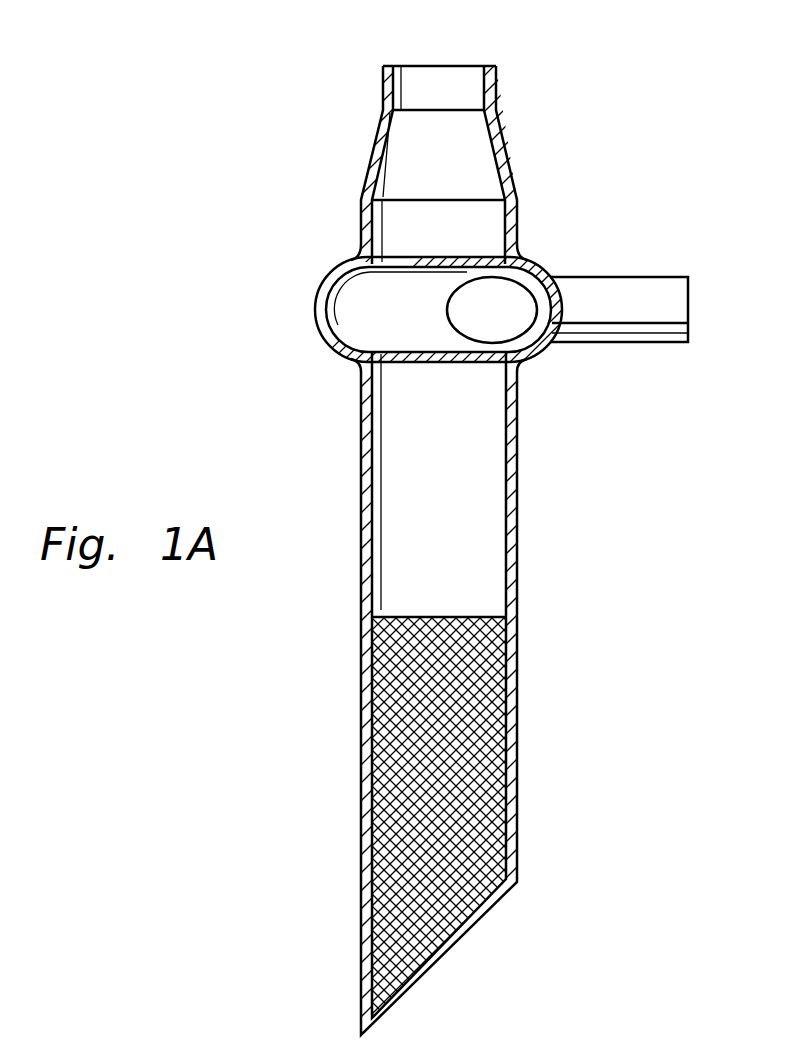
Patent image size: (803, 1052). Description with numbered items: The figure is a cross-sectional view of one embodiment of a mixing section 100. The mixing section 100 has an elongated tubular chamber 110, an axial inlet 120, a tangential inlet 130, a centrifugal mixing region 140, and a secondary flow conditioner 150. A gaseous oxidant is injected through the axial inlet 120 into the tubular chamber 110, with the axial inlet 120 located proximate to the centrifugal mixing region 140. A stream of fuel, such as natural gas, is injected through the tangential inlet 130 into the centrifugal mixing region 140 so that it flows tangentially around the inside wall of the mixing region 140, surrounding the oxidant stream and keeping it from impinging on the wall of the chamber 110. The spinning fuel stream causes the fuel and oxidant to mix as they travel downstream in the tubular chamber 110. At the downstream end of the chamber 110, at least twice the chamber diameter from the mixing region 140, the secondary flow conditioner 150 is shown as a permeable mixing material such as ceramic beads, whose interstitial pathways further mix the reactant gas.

The mixing section 100 is at (590, 502).
The elongated tubular chamber 110 is at (361, 468).
The axial inlet 120 is at (483, 88).
The tangential inlet 130 is at (647, 276).
The centrifugal mixing region 140 is at (317, 313).
The secondary flow conditioner 150 is at (481, 733).